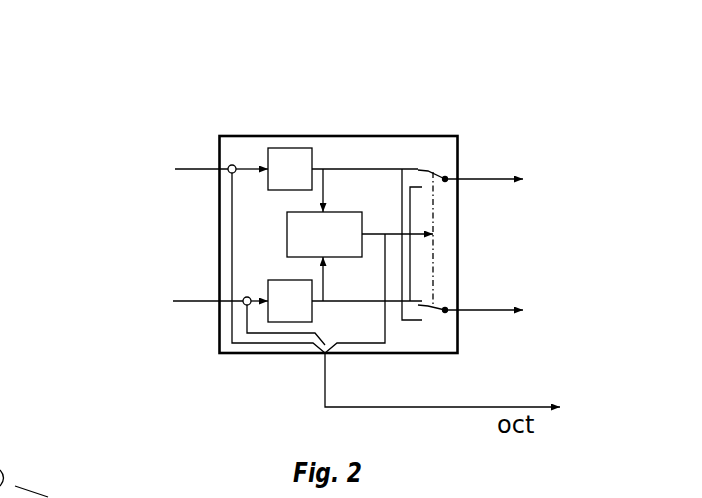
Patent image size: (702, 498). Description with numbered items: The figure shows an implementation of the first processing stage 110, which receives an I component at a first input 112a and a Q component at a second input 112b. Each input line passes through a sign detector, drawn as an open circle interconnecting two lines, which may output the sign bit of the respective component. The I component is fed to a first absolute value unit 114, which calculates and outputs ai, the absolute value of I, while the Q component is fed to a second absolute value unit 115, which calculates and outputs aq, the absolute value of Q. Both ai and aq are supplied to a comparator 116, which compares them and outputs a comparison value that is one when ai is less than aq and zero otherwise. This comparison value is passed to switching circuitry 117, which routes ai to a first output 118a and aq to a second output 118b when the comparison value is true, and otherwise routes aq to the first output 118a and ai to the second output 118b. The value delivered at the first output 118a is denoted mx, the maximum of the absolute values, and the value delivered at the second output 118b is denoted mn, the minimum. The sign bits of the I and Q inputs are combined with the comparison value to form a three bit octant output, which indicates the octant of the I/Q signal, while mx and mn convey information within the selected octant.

The first processing stage 110 is at (163, 73).
The first input 112a is at (212, 180).
The second input 112b is at (210, 306).
The first absolute value unit 114 is at (293, 148).
The second absolute value unit 115 is at (282, 280).
The comparator 116 is at (287, 229).
The switching circuitry 117 is at (419, 150).
The first output 118a is at (463, 170).
The second output 118b is at (463, 298).